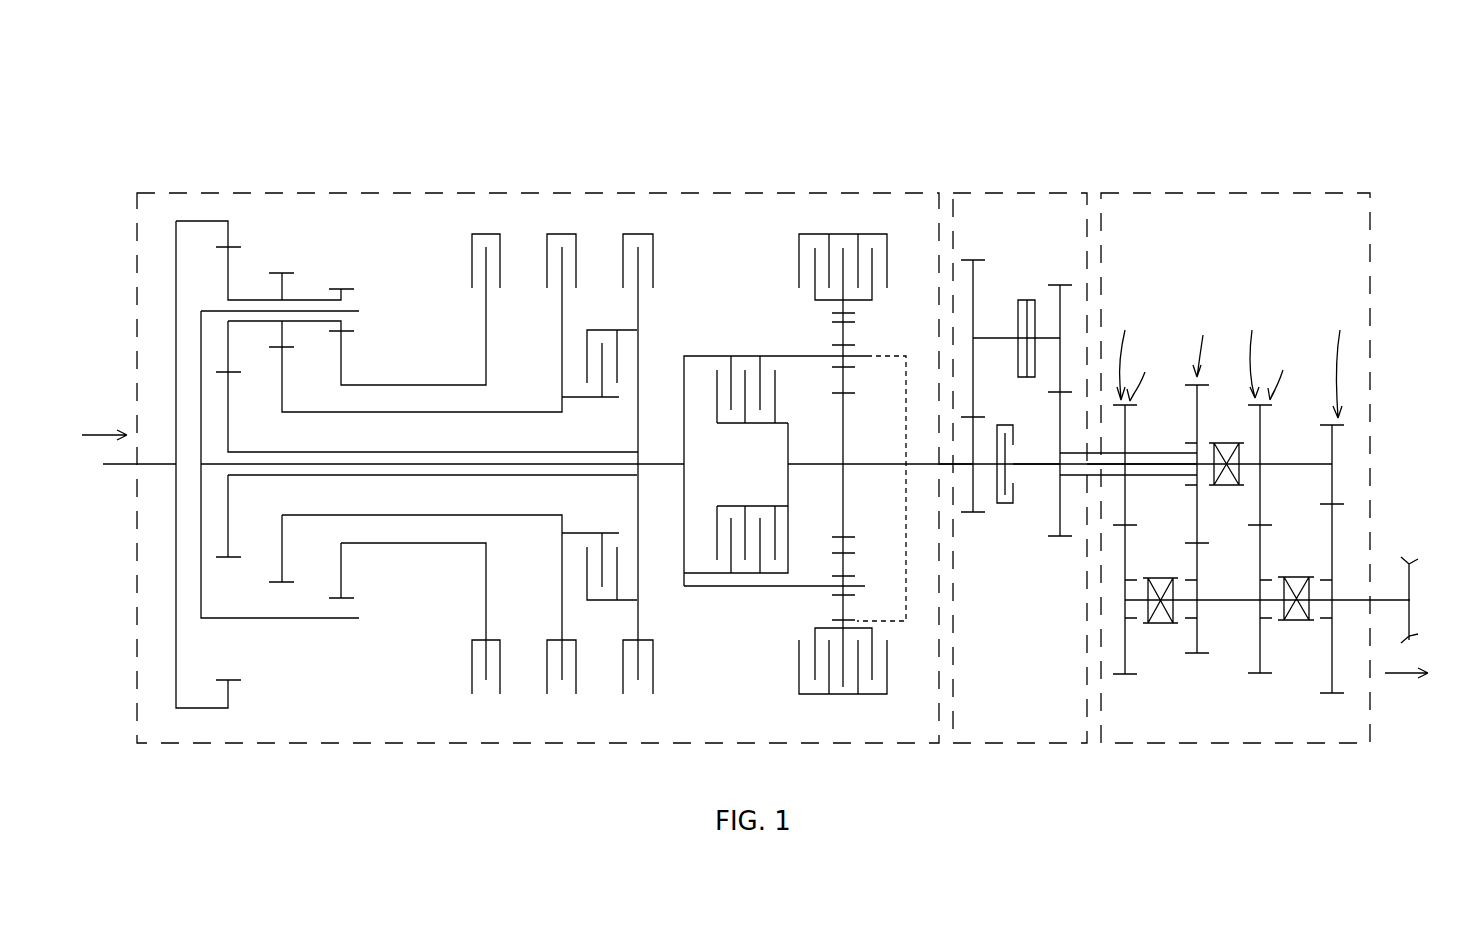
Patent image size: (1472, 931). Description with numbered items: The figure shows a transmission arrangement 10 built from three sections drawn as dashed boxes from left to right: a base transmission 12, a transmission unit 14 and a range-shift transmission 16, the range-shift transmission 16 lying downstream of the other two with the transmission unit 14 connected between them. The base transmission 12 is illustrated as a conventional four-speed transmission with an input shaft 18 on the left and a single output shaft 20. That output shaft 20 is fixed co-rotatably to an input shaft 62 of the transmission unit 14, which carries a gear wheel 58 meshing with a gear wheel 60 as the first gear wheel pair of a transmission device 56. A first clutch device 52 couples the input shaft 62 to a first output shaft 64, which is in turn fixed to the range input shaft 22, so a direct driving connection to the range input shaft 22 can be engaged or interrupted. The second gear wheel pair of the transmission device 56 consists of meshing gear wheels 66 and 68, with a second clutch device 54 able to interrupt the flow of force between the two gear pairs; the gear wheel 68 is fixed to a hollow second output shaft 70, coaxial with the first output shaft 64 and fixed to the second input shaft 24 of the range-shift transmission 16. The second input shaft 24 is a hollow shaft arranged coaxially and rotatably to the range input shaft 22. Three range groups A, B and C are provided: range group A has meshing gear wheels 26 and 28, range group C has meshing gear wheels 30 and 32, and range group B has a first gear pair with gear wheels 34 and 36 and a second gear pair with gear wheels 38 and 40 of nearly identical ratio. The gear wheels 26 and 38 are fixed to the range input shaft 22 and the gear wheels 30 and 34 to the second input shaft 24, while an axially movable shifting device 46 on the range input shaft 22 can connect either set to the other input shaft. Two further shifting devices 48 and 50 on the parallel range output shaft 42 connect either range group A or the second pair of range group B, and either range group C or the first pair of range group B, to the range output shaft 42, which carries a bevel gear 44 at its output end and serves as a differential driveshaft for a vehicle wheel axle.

The transmission arrangement 10 is at (861, 92).
The base transmission 12 is at (734, 428).
The transmission unit 14 is at (1005, 428).
The range-shift transmission 16 is at (1245, 428).
The input shaft 18 is at (123, 466).
The output shaft 20 is at (918, 464).
The range input shaft 22 is at (1143, 464).
The second input shaft 24 is at (1176, 453).
The gear wheel 26 is at (1332, 445).
The gear wheel 28 is at (1332, 528).
The gear wheel 30 is at (1197, 400).
The gear wheel 32 is at (1197, 642).
The gear wheel 34 is at (1125, 498).
The gear wheel 36 is at (1125, 652).
The gear wheel 38 is at (1260, 426).
The gear wheel 40 is at (1260, 664).
The range output shaft 42 is at (1244, 599).
The bevel gear 44 is at (1409, 563).
The shifting device 46 is at (1230, 486).
The shifting device 48 is at (1300, 621).
The shifting device 50 is at (1165, 624).
The first clutch device 52 is at (1010, 510).
The second clutch device 54 is at (1027, 300).
The transmission device 56 is at (995, 273).
The gear wheel 58 is at (972, 495).
The gear wheel 60 is at (973, 300).
The input shaft 62 is at (960, 477).
The first output shaft 64 is at (1038, 464).
The gear wheel 66 is at (1062, 300).
The gear wheel 68 is at (1060, 410).
The second output shaft 70 is at (1078, 478).